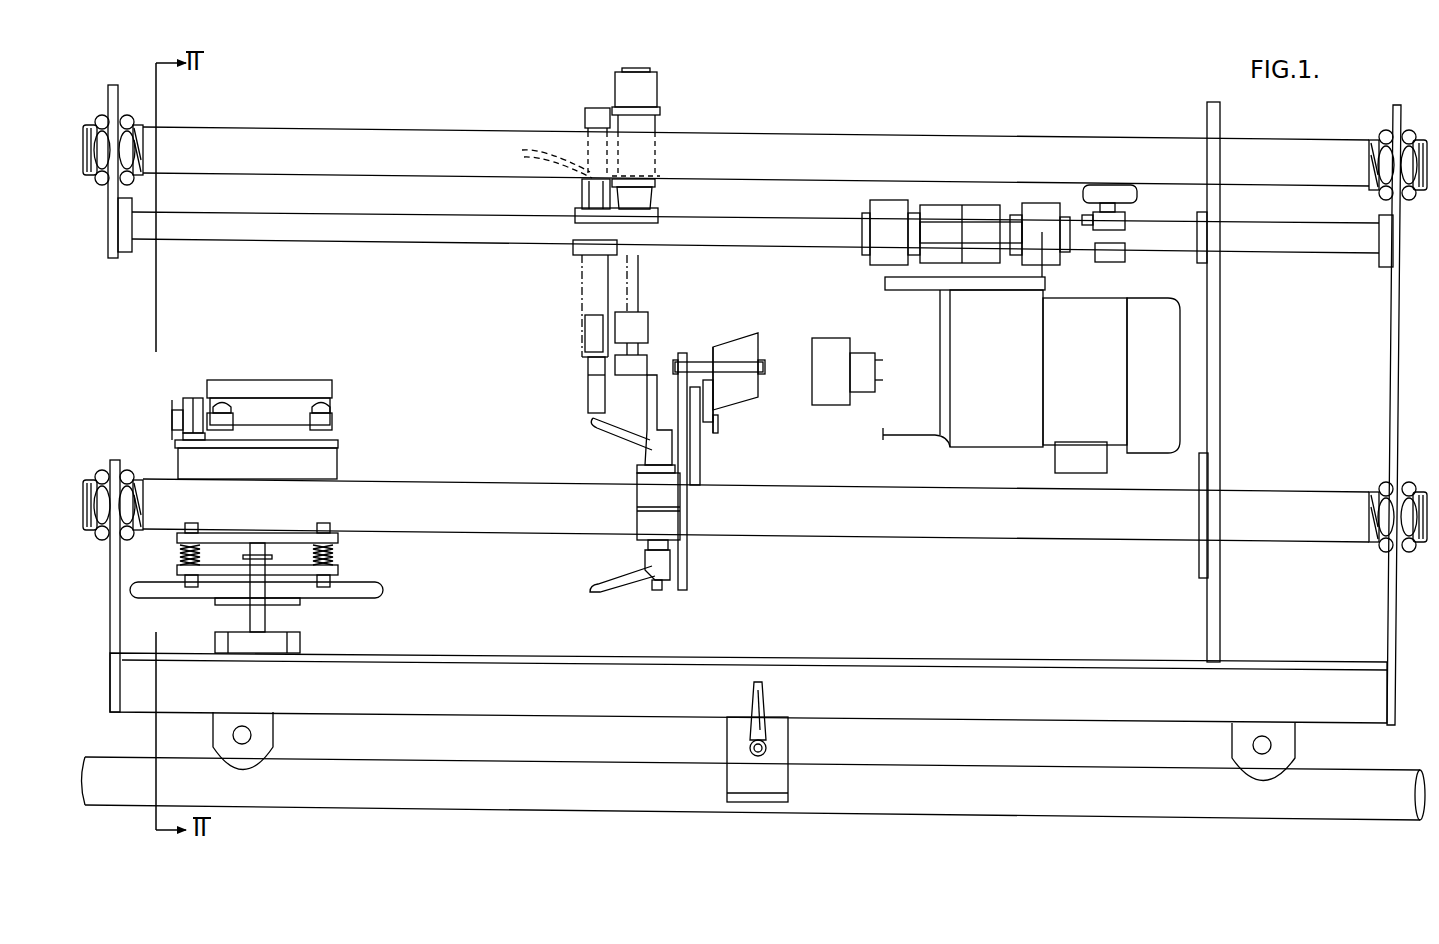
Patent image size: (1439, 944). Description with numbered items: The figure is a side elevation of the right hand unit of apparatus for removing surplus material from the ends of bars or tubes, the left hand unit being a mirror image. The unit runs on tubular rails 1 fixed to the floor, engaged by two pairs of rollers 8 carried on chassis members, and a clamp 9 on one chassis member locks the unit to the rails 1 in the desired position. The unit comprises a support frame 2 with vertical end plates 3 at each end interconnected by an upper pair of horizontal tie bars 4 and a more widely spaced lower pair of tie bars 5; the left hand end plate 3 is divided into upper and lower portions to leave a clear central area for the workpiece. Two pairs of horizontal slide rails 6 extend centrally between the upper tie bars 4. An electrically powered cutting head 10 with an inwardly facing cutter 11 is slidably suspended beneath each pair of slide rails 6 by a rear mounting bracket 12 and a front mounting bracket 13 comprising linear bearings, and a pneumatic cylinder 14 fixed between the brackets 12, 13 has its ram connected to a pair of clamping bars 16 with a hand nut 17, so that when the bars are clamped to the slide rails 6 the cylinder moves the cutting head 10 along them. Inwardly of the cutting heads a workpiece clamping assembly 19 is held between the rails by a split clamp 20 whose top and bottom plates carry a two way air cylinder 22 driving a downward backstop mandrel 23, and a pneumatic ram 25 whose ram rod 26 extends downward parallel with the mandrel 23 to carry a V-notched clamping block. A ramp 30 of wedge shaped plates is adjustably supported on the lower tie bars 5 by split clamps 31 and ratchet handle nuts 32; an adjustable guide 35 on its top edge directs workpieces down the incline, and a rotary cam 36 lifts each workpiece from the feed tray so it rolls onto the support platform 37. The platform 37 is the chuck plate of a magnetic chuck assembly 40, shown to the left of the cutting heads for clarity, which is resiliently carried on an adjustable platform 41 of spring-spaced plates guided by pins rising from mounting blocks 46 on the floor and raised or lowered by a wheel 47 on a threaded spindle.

The rails 1 is at (1048, 800).
The support frame 2 is at (1400, 378).
The end plates 3 is at (112, 236).
The upper tie bars 4 is at (697, 140).
The lower tie bars 5 is at (752, 522).
The slide rails 6 is at (410, 242).
The rollers 8 is at (251, 740).
The clamp 9 is at (780, 742).
The cutting head 10 is at (1005, 375).
The cutter 11 is at (825, 344).
The rear mounting bracket 12 is at (882, 205).
The front mounting bracket 13 is at (1040, 210).
The pneumatic cylinder 14 is at (940, 210).
The clamping bars 16 is at (1125, 220).
The hand nut 17 is at (1115, 190).
The workpiece clamping assembly 19 is at (666, 198).
The split clamp 20 is at (580, 252).
The two way air cylinder 22 is at (585, 112).
The mandrel 23 is at (590, 392).
The pneumatic ram 25 is at (647, 88).
The ram rod 26 is at (633, 290).
The ramp 30 is at (683, 350).
The split clamps 31 is at (612, 518).
The ratchet handle nuts 32 is at (606, 598).
The adjustable guide 35 is at (730, 398).
The rotary cam 36 is at (626, 413).
The support platform 37 is at (220, 388).
The magnetic chuck assembly 40 is at (342, 418).
The adjustable platform 41 is at (354, 562).
The mounting blocks 46 is at (300, 642).
The wheel 47 is at (372, 598).